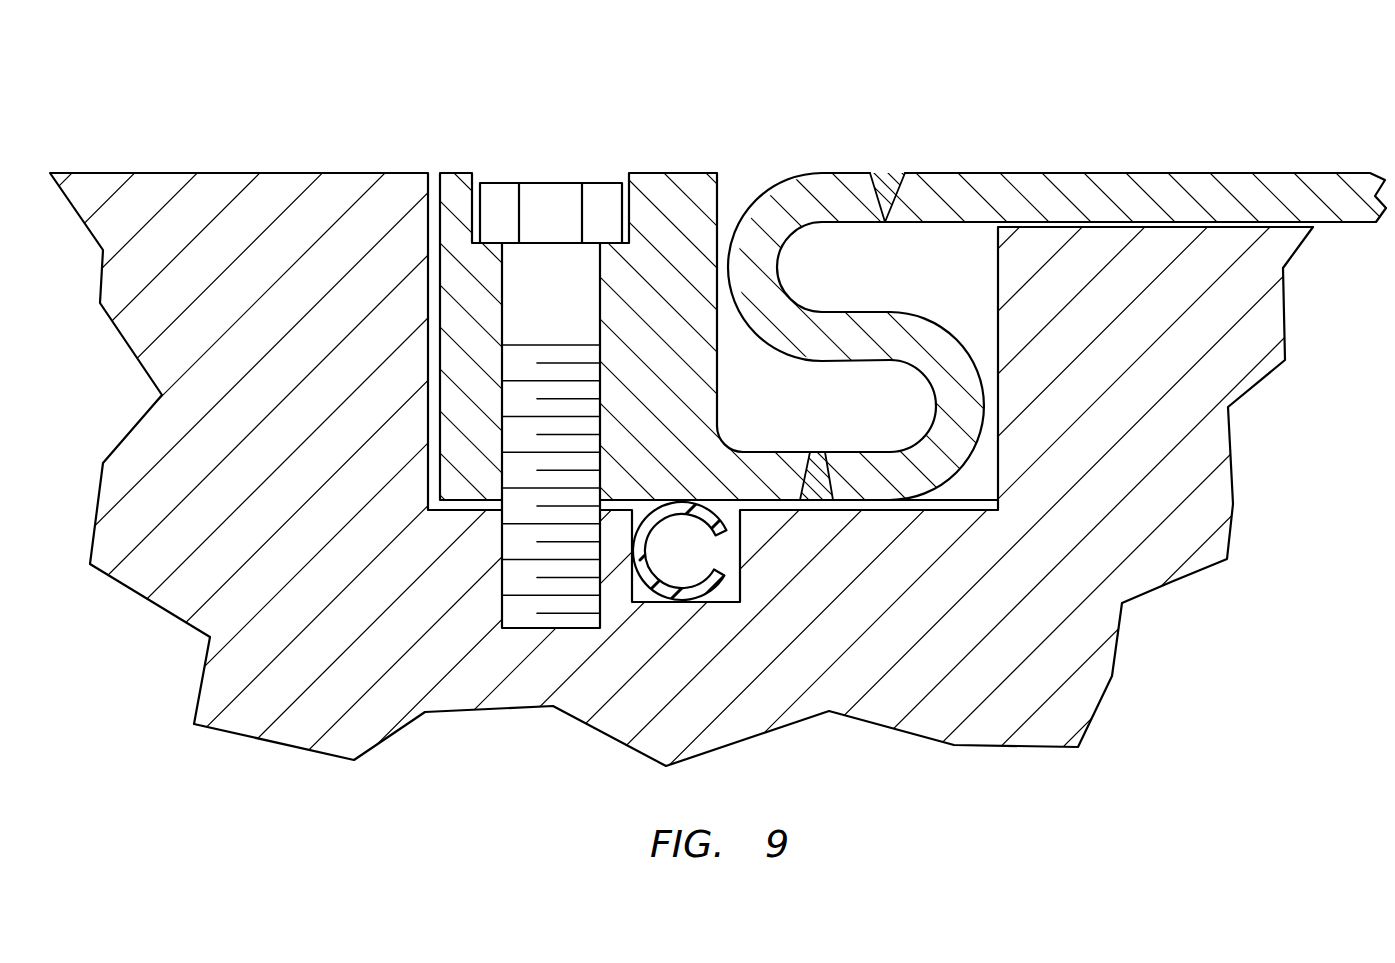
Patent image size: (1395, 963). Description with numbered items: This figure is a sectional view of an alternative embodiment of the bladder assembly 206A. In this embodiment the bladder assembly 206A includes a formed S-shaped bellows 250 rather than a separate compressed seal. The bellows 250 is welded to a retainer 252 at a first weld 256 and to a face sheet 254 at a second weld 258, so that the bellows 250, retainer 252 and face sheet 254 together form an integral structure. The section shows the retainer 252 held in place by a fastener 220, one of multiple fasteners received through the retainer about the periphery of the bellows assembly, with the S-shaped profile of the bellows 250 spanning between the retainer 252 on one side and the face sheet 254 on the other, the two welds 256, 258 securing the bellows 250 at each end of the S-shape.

The bladder assembly 206A is at (1082, 103).
The fastener 220 is at (562, 197).
The bellows 250 is at (821, 180).
The retainer 252 is at (677, 340).
The face sheet 254 is at (1188, 173).
The first weld 256 is at (812, 501).
The second weld 258 is at (890, 180).